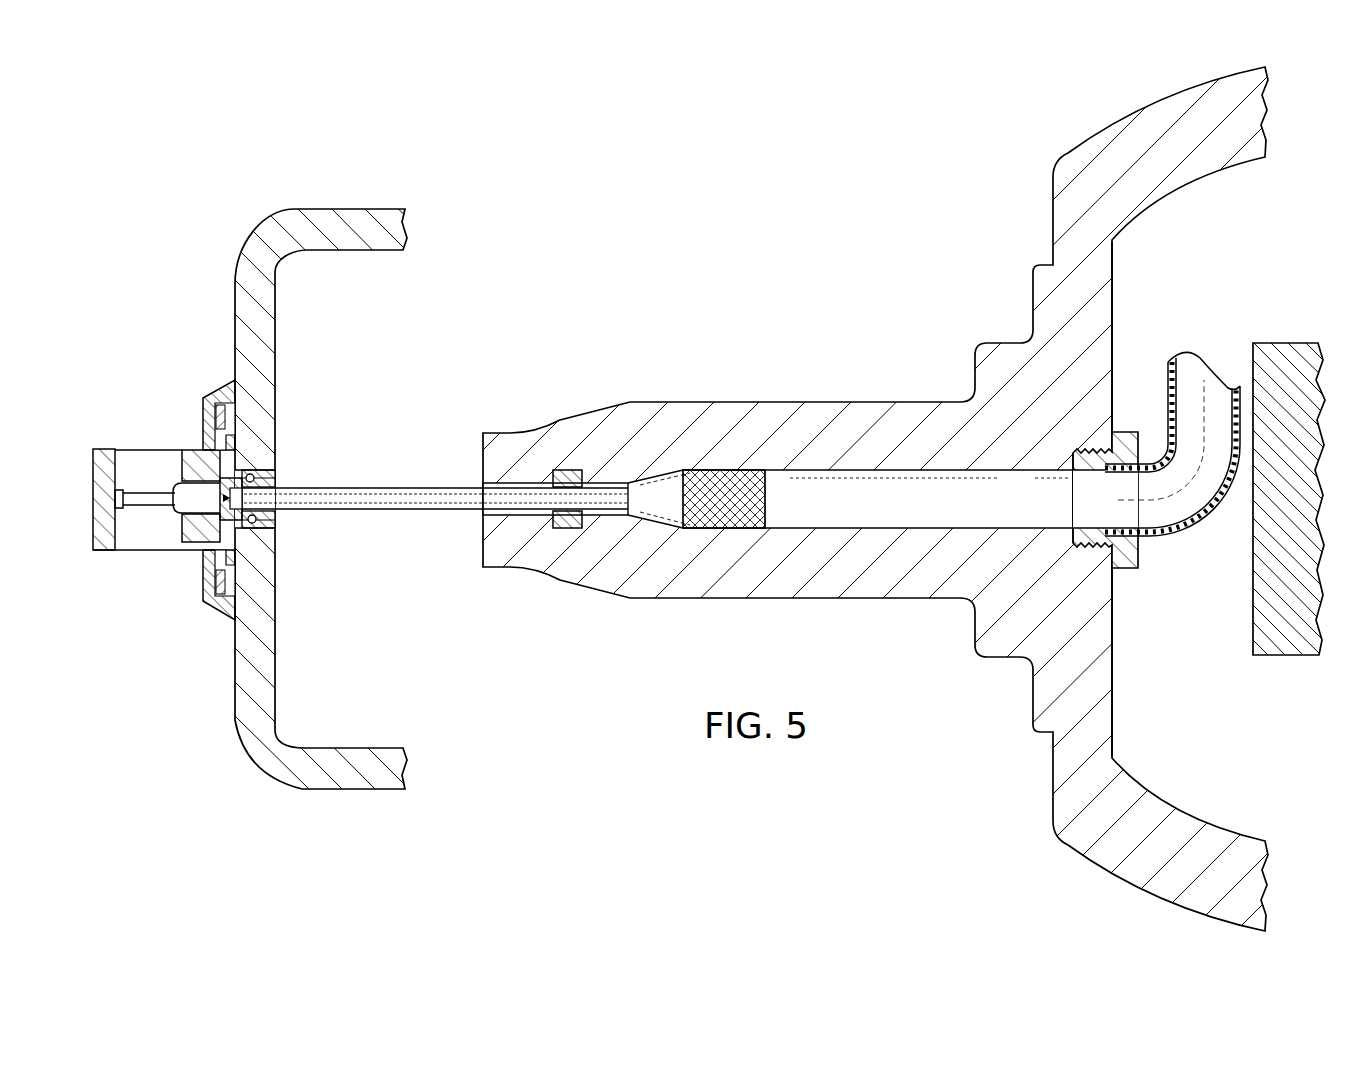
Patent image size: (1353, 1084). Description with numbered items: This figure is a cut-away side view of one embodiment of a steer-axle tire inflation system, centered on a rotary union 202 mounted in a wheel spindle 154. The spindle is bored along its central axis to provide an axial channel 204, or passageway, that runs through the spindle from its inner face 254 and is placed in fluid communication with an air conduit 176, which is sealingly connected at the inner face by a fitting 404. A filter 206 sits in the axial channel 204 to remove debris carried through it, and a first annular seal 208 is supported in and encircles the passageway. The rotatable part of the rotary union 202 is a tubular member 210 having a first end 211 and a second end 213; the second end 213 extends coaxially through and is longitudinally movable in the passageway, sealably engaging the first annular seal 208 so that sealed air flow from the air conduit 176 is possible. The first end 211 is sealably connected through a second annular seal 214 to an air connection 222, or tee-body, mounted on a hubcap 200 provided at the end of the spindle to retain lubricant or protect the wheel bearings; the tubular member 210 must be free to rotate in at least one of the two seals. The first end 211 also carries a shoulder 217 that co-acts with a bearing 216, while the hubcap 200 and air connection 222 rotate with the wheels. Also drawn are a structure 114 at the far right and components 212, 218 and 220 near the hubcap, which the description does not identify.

The wall 114 is at (1290, 342).
The wheel spindle 154 is at (745, 400).
The air conduit 176 is at (1186, 528).
The hubcap 200 is at (234, 708).
The rotary union 202 is at (383, 407).
The axial channel 204 is at (1005, 470).
The filter 206 is at (768, 494).
The first annular seal 208 is at (577, 468).
The tubular member 210 is at (383, 509).
The first end 211 is at (278, 512).
The ferrule 212 is at (250, 480).
The second end 213 is at (622, 488).
The second annular seal 214 is at (248, 468).
The bearing 216 is at (178, 485).
The shoulder 217 is at (200, 520).
The bracket 218 is at (222, 612).
The nut 220 is at (204, 572).
The air connection 222 is at (102, 552).
The inner face 254 is at (1112, 625).
The fitting 404 is at (1124, 432).